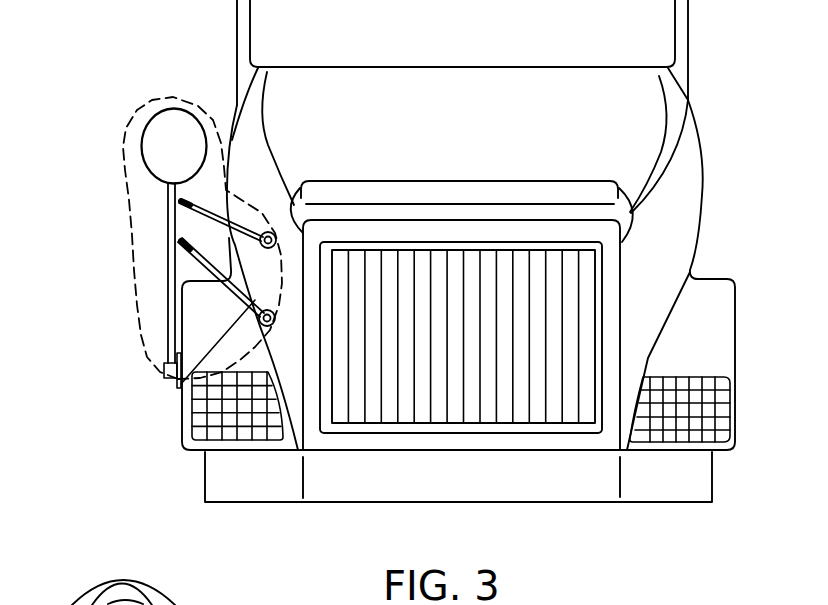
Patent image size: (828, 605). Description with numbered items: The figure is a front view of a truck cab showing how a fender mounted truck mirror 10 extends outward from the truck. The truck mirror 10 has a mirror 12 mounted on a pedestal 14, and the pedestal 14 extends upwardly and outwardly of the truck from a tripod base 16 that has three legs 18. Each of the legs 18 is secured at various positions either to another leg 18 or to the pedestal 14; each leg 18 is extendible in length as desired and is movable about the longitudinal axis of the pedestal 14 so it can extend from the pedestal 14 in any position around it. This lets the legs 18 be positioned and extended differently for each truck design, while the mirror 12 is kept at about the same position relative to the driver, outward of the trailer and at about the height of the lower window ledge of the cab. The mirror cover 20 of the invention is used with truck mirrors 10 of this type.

The truck mirror 10 is at (135, 153).
The mirror 12 is at (176, 128).
The pedestal 14 is at (170, 183).
The tripod base 16 is at (150, 293).
The legs 18 is at (197, 214).
The mirror cover 20 is at (134, 244).